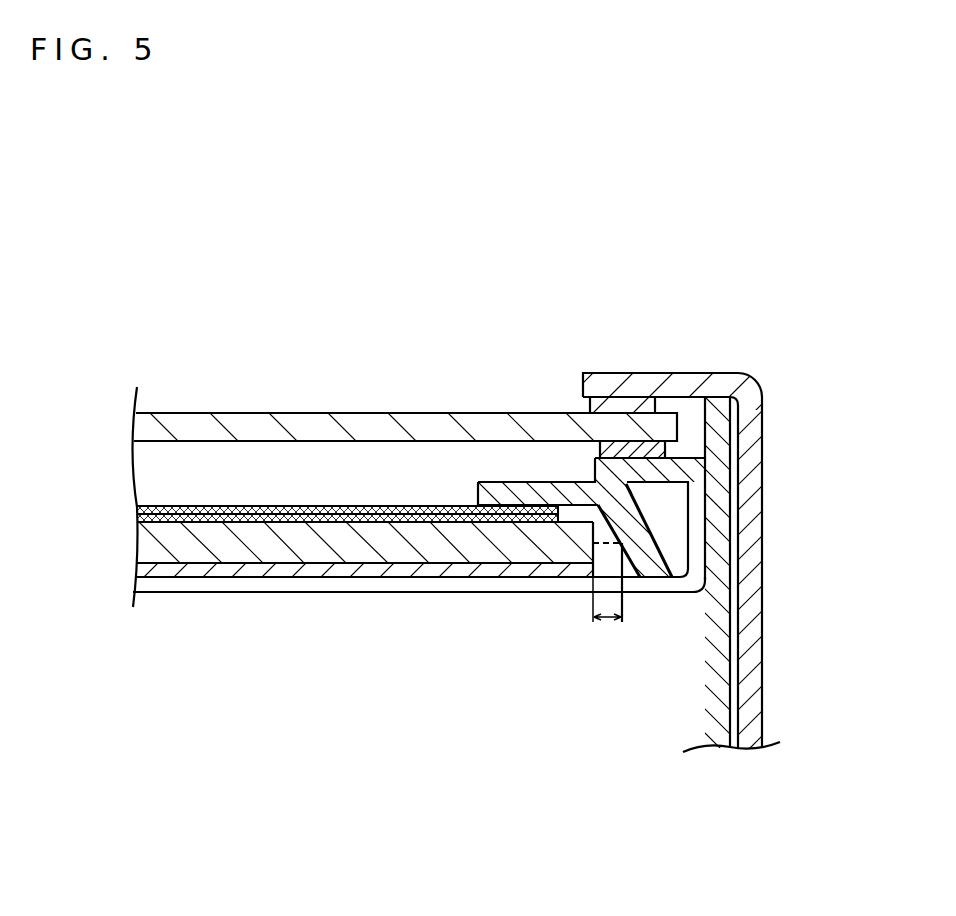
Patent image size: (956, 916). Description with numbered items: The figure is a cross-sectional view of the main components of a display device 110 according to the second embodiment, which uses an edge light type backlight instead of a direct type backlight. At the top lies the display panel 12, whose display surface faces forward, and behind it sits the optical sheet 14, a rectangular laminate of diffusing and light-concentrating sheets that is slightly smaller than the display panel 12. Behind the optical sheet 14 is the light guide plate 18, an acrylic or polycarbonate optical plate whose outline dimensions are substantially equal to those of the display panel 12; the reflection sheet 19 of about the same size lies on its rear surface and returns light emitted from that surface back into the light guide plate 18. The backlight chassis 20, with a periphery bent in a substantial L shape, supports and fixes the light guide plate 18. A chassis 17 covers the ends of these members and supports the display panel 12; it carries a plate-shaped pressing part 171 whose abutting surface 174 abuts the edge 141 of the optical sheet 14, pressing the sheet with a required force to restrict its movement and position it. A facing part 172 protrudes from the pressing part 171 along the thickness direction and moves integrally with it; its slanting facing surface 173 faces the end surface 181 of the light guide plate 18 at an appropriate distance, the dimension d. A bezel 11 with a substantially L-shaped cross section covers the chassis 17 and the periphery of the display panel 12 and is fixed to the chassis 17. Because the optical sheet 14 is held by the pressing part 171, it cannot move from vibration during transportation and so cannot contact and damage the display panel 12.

The display device 110 is at (848, 191).
The bezel 11 is at (756, 374).
The display panel 12 is at (245, 412).
The optical sheet 14 is at (140, 522).
The edge of the optical sheet 141 is at (478, 482).
The chassis 17 is at (730, 680).
The pressing part 171 is at (508, 488).
The facing part 172 is at (648, 527).
The facing surface 173 is at (630, 555).
The abutting surface 174 is at (540, 507).
The light guide plate 18 is at (192, 553).
The end surface of the light guide plate 181 is at (597, 527).
The reflection sheet 19 is at (290, 568).
The backlight chassis 20 is at (410, 592).